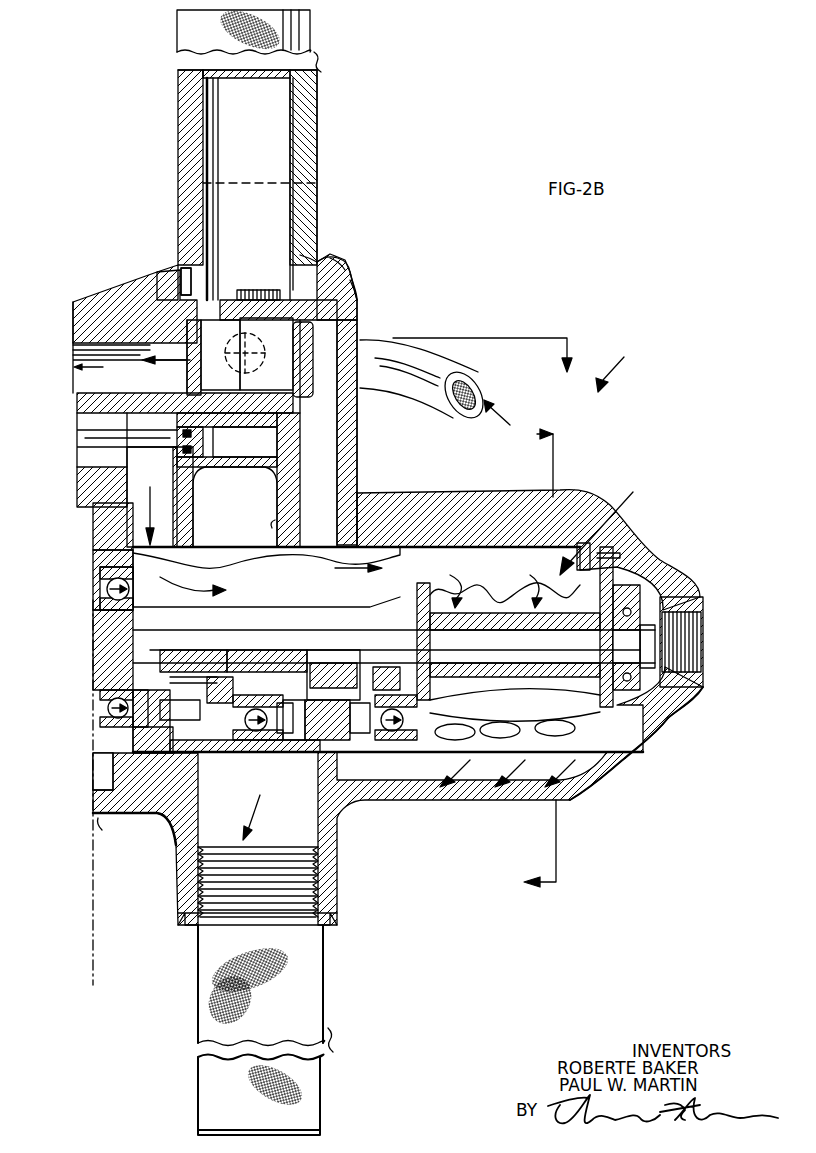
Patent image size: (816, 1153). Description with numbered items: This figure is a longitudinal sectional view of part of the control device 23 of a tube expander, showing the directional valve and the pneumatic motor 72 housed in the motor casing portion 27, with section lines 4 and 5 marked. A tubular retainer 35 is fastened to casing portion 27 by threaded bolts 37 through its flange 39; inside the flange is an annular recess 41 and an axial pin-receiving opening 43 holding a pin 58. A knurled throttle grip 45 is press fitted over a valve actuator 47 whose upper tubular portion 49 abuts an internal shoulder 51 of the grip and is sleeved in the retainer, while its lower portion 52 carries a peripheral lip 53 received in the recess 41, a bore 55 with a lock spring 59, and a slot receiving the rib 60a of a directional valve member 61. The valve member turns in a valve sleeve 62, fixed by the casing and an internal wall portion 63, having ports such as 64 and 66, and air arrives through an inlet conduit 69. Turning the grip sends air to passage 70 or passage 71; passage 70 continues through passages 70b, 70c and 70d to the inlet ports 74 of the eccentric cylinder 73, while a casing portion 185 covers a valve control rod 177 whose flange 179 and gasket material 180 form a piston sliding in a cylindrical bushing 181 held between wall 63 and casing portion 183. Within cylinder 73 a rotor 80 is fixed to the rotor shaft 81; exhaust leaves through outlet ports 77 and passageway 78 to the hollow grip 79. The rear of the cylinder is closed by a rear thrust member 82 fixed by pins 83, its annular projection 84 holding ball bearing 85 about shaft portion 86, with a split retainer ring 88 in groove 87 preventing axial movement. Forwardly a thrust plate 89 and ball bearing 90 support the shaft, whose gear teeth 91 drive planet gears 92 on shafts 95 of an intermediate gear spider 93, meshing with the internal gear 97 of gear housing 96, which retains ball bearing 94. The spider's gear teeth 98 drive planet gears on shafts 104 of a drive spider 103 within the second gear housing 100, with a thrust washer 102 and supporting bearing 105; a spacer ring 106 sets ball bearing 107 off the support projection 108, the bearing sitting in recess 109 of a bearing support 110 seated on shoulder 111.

The internal shoulder 51 is at (186, 85).
The upper tubular portion 49 is at (256, 110).
The throttle grip 45 is at (319, 112).
The valve actuator 47 is at (284, 162).
The retainer 35 is at (317, 182).
The lower portion 52 is at (327, 236).
The lock spring 59 is at (322, 258).
The threaded bolts 37 is at (348, 264).
The bore 55 is at (349, 276).
The flange 39 is at (362, 295).
The passage 71 is at (370, 319).
The casing portion 185 is at (95, 300).
The annular recess 41 is at (153, 276).
The pin-receiving opening 43 is at (215, 262).
The pin 58 is at (206, 285).
The rib 60a is at (250, 290).
The peripheral projecting lip 53 is at (137, 357).
The port 64 is at (188, 380).
The port 66 is at (308, 380).
The inlet conduit 69 is at (478, 388).
The section line 4 is at (482, 367).
The control device 23 is at (622, 363).
The section line 5 is at (533, 659).
The passage 70 is at (88, 380).
The internal wall portion 63 is at (80, 411).
The valve control rod 177 is at (82, 443).
The passageway 78 is at (223, 438).
The cylindrical bushing 181 is at (290, 448).
The directional valve member 61 is at (357, 418).
The valve sleeve 62 is at (357, 445).
The flange 179 is at (150, 448).
The gasket material 180 is at (193, 478).
The casing portion 183 is at (251, 524).
The casing portion 27 is at (585, 490).
The pneumatic motor 72 is at (610, 528).
The passage 70b is at (84, 490).
The passage 70c is at (130, 510).
The bearing support 110 is at (115, 553).
The recess 109 is at (102, 590).
The passage 70d is at (292, 602).
The inlet ports 74 is at (482, 598).
The pins 83 is at (620, 555).
The annular projection 84 is at (660, 582).
The ball bearing 85 is at (648, 595).
The split retainer ring 88 is at (692, 602).
The gear teeth 98 is at (200, 655).
The shafts 104 is at (225, 692).
The intermediate gear spider 93 is at (265, 668).
The gear teeth 91 is at (345, 660).
The ball bearing 90 is at (400, 660).
The rotor shaft 81 is at (490, 652).
The shaft portion 86 is at (622, 638).
The drive spider 103 is at (107, 662).
The spacer ring 106 is at (108, 700).
The ball bearing 107 is at (140, 702).
The support projection 108 is at (150, 735).
The thrust plate 89 is at (480, 700).
The groove 87 is at (690, 683).
The rotor 80 is at (655, 718).
The rear thrust member 82 is at (638, 742).
The cylinder 73 is at (598, 773).
The second gear housing 100 is at (183, 748).
The supporting bearing 105 is at (228, 752).
The thrust washer 102 is at (290, 742).
The internal gear 97 is at (305, 735).
The planet gears 92 is at (360, 735).
The shafts 95 is at (350, 730).
The ball bearing 94 is at (393, 735).
The gear housing 96 is at (257, 857).
The outlet ports 77 is at (510, 733).
The shoulder 111 is at (134, 829).
The hollow grip 79 is at (304, 990).